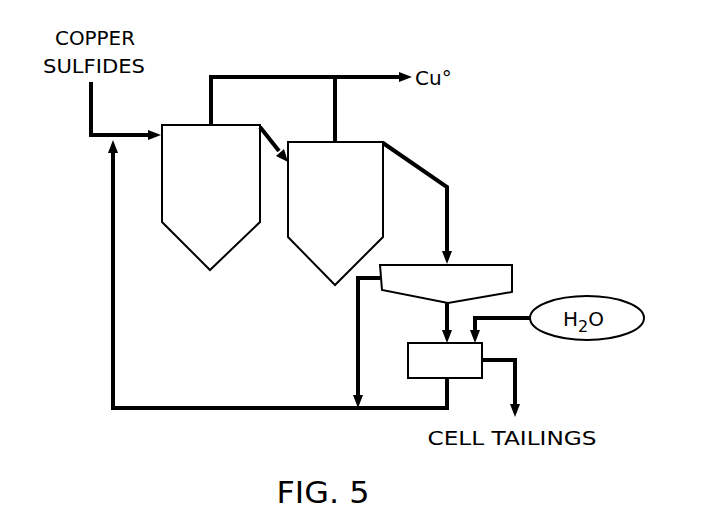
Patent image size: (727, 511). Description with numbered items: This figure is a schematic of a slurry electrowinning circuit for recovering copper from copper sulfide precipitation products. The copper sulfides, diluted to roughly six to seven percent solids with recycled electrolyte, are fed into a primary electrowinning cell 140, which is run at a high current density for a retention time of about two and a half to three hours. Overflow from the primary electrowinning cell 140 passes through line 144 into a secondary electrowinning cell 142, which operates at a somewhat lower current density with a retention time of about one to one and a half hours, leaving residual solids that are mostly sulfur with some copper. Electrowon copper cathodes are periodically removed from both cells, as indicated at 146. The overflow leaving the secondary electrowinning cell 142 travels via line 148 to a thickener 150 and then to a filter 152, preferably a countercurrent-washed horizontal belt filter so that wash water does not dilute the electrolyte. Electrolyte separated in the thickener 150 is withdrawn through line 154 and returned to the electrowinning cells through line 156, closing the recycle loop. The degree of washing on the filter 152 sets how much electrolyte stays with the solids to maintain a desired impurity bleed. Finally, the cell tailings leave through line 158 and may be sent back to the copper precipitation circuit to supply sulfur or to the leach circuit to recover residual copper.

The primary electrowinning cell 140 is at (211, 197).
The secondary electrowinning cell 142 is at (335, 213).
The line 144 is at (270, 134).
The electrowon copper cathodes removal 146 is at (360, 76).
The line 148 is at (430, 171).
The thickener 150 is at (446, 284).
The filter 152 is at (445, 360).
The line 154 is at (358, 330).
The line 156 is at (113, 252).
The line 158 is at (518, 370).